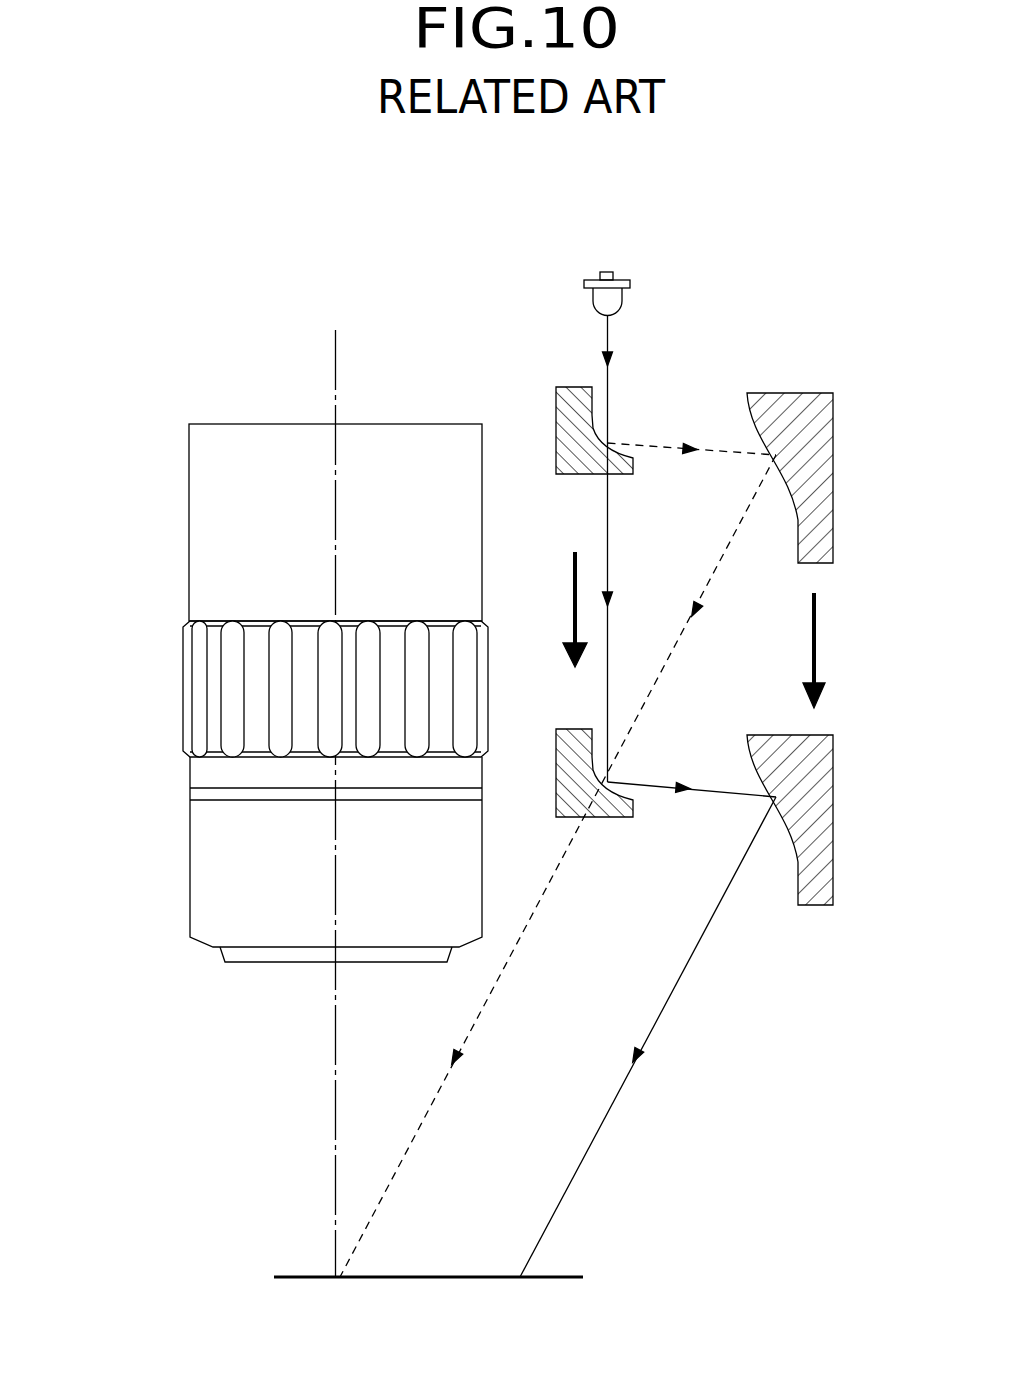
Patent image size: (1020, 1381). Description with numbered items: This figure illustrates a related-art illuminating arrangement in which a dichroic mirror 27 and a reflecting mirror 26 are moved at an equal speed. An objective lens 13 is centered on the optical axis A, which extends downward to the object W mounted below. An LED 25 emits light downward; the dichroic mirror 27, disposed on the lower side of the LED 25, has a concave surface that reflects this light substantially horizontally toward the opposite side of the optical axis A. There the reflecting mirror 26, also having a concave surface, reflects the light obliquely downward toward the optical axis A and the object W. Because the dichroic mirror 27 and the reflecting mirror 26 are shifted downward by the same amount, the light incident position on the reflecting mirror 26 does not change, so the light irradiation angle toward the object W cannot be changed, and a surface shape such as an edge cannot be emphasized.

The objective lens 13 is at (207, 498).
The LED 25 is at (623, 300).
The reflecting mirror 26 is at (826, 788).
The dichroic mirror 27 is at (600, 817).
The optical axis A is at (337, 781).
The object W is at (307, 1277).